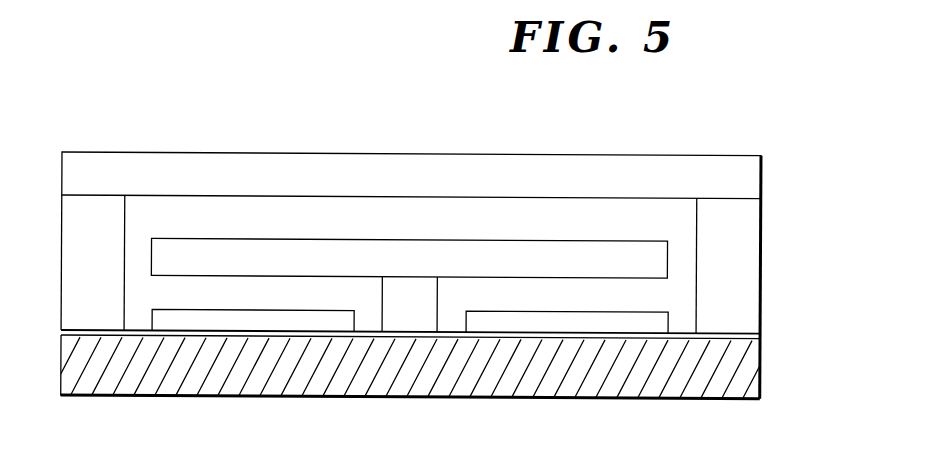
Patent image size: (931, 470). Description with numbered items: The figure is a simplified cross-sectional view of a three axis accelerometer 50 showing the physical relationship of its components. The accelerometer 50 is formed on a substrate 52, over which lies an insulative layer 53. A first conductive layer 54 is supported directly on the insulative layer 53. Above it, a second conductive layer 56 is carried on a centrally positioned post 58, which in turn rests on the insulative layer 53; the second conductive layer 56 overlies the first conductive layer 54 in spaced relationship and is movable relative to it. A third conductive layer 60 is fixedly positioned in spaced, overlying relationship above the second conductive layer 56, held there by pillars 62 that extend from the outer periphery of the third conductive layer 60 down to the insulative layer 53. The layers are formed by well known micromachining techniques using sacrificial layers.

The three axis accelerometer 50 is at (412, 112).
The substrate 52 is at (576, 392).
The insulative layer 53 is at (64, 333).
The first conductive layer 54 is at (660, 323).
The second conductive layer 56 is at (662, 258).
The post 58 is at (398, 315).
The third conductive layer 60 is at (173, 158).
The pillars 62 is at (68, 250).